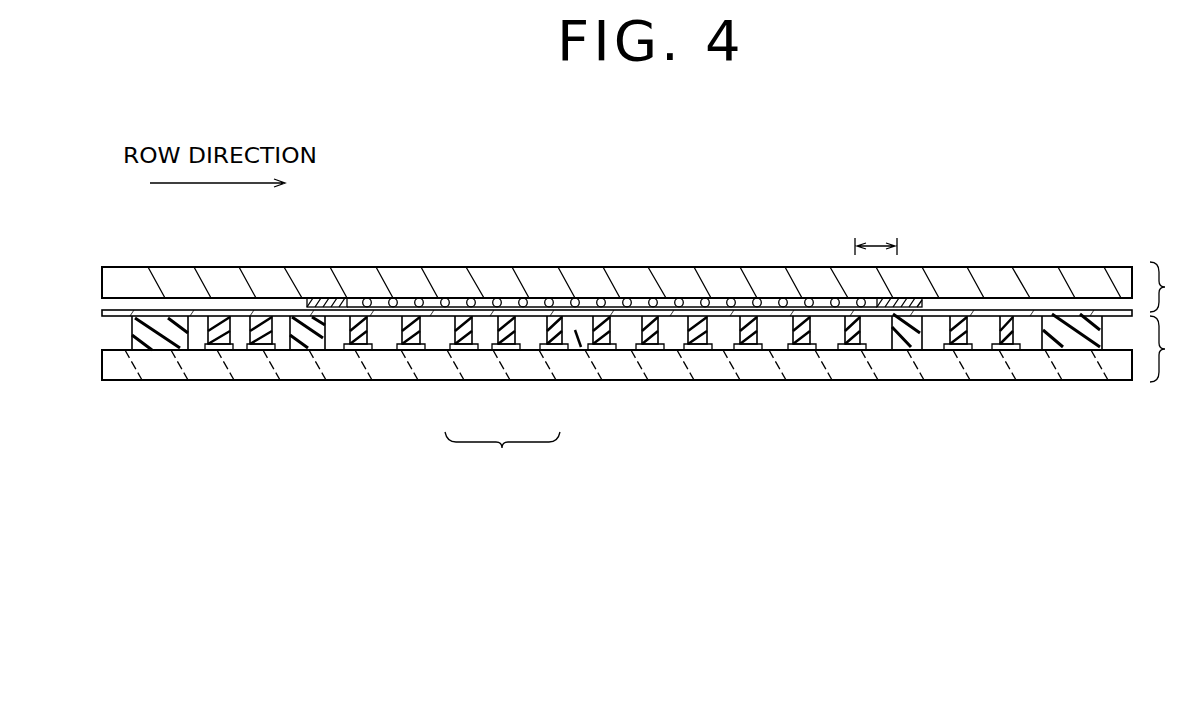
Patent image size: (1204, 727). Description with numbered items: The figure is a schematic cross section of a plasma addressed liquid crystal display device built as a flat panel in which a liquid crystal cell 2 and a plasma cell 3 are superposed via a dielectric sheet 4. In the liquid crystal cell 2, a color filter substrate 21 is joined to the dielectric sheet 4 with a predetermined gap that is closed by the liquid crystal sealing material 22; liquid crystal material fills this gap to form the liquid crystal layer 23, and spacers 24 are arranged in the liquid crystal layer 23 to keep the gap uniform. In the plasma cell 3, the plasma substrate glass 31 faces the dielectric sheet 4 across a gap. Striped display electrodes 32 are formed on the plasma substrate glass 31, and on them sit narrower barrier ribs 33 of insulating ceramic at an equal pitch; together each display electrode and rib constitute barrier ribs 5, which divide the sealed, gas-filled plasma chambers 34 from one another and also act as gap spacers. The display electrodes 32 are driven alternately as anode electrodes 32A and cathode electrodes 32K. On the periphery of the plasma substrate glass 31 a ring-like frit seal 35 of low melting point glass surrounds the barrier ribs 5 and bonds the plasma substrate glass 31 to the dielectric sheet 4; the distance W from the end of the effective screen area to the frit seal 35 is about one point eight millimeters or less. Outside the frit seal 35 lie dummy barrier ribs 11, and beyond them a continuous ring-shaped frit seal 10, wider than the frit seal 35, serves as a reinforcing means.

The liquid crystal cell 2 is at (1168, 287).
The plasma cell 3 is at (1168, 349).
The dielectric sheet 4 is at (102, 313).
The barrier ribs 5 is at (502, 462).
The frit seal 10 is at (158, 332).
The dummy barrier ribs 11 is at (224, 335).
The color filter substrate 21 is at (655, 267).
The liquid crystal sealing material 22 is at (331, 301).
The liquid crystal layer 23 is at (410, 303).
The spacers 24 is at (466, 302).
The plasma substrate glass 31 is at (394, 380).
The display electrodes 32 is at (447, 349).
The cathode electrodes 32K is at (728, 348).
The anode electrodes 32A is at (779, 348).
The barrier ribs 33 is at (530, 343).
The plasma chambers 34 is at (580, 348).
The frit seal 35 is at (305, 349).
The distance W is at (876, 234).